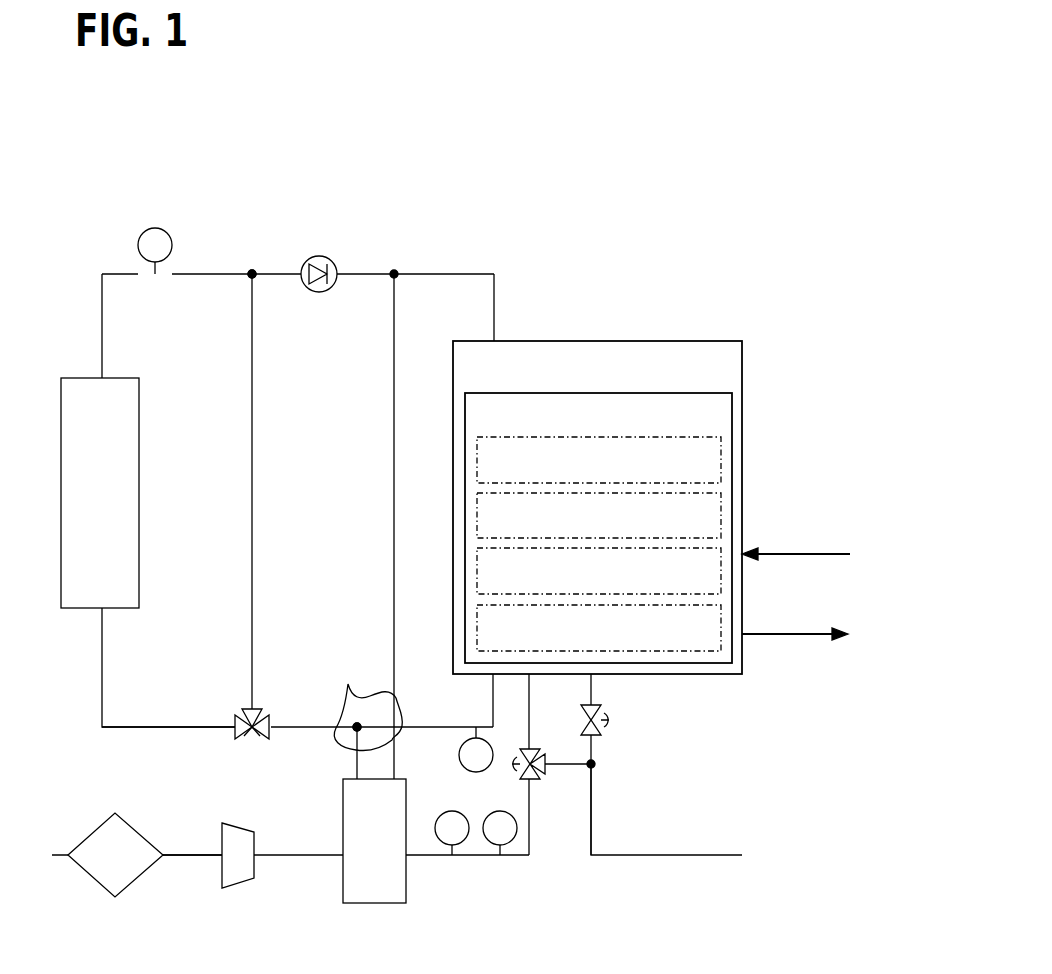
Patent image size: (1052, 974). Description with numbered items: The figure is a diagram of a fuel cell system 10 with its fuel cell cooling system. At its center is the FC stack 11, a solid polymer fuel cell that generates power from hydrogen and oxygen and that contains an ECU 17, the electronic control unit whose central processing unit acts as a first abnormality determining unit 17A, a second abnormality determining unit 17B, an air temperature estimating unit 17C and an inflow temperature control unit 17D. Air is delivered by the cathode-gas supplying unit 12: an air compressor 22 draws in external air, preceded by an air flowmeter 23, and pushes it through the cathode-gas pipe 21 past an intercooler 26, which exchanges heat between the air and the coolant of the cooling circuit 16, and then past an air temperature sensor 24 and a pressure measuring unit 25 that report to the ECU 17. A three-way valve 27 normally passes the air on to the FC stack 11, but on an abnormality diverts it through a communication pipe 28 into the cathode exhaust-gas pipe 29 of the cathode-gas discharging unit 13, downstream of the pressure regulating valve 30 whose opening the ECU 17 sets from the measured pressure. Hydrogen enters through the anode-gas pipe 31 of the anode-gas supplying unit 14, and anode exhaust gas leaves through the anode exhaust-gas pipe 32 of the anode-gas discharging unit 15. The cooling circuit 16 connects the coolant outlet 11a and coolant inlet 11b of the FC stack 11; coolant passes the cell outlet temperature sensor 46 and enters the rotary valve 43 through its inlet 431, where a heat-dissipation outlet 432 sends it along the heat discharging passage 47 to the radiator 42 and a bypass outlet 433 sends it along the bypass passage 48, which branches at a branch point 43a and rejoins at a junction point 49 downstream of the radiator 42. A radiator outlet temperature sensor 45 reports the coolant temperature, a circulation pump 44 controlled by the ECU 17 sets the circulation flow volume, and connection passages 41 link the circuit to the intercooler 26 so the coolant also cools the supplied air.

The fuel cell system 10 is at (617, 278).
The FC stack 11 is at (628, 341).
The coolant outlet 11a is at (492, 686).
The coolant inlet 11b is at (494, 341).
The cathode-gas supplying unit 12 is at (288, 875).
The cathode-gas discharging unit 13 is at (608, 864).
The anode-gas supplying unit 14 is at (780, 510).
The anode-gas discharging unit 15 is at (770, 672).
The cooling circuit 16 is at (421, 254).
The ECU 17 is at (480, 393).
The first abnormality determining unit 17A is at (477, 462).
The second abnormality determining unit 17B is at (477, 518).
The air temperature estimating unit 17C is at (477, 575).
The inflow temperature control unit 17D is at (477, 632).
The cathode-gas pipe 21 is at (187, 860).
The air compressor 22 is at (256, 836).
The air flowmeter 23 is at (140, 830).
The air temperature sensor 24 is at (452, 811).
The pressure measuring unit 25 is at (498, 811).
The intercooler 26 is at (375, 903).
The three-way valve 27 is at (535, 782).
The communication pipe 28 is at (548, 758).
The cathode exhaust-gas pipe 29 is at (592, 810).
The pressure regulating valve 30 is at (604, 706).
The anode-gas pipe 31 is at (831, 554).
The anode exhaust-gas pipe 32 is at (765, 634).
The connection passages 41 is at (368, 705).
The radiator 42 is at (140, 489).
The rotary valve 43 is at (272, 735).
The branch point 43a is at (240, 740).
The inlet 431 is at (272, 718).
The heat-dissipation outlet 432 is at (235, 724).
The bypass outlet 433 is at (248, 710).
The circulation pump 44 is at (319, 256).
The radiator outlet temperature sensor 45 is at (155, 228).
The cell outlet temperature sensor 46 is at (459, 752).
The heat discharging passage 47 is at (155, 730).
The bypass passage 48 is at (253, 577).
The junction point 49 is at (252, 268).